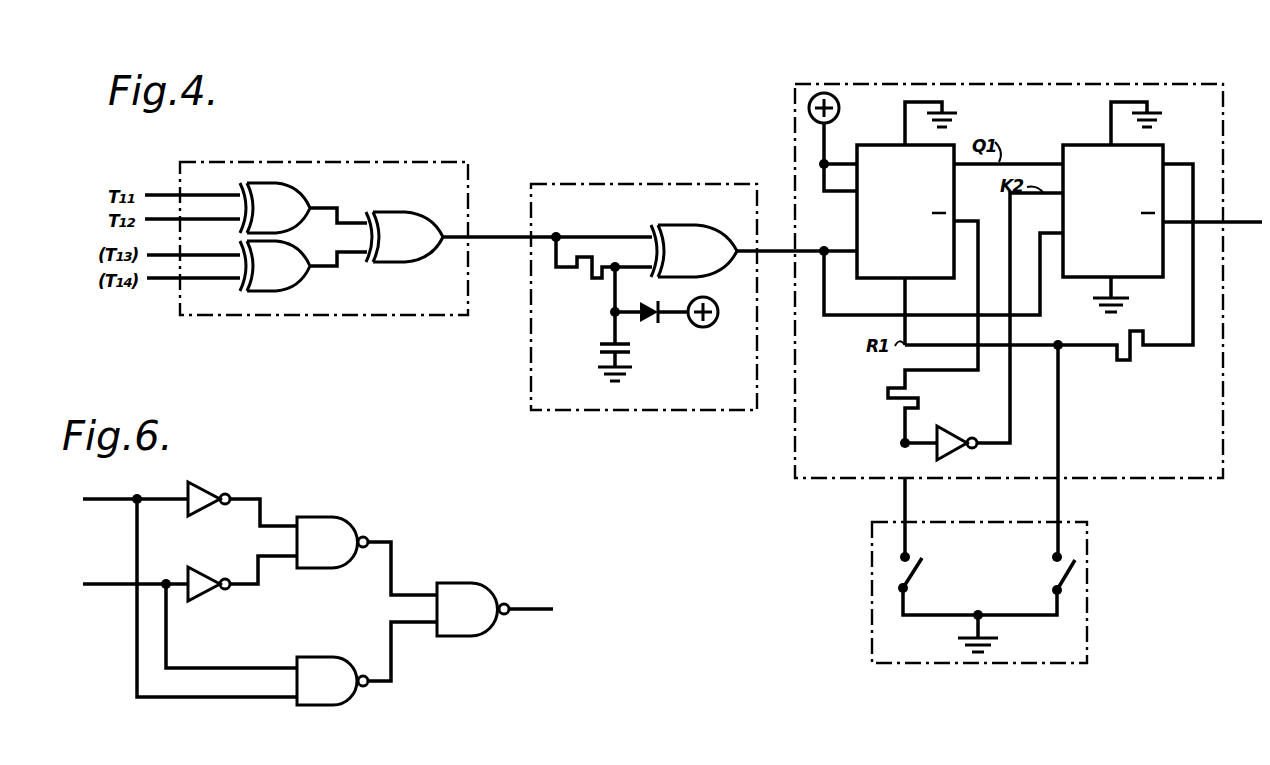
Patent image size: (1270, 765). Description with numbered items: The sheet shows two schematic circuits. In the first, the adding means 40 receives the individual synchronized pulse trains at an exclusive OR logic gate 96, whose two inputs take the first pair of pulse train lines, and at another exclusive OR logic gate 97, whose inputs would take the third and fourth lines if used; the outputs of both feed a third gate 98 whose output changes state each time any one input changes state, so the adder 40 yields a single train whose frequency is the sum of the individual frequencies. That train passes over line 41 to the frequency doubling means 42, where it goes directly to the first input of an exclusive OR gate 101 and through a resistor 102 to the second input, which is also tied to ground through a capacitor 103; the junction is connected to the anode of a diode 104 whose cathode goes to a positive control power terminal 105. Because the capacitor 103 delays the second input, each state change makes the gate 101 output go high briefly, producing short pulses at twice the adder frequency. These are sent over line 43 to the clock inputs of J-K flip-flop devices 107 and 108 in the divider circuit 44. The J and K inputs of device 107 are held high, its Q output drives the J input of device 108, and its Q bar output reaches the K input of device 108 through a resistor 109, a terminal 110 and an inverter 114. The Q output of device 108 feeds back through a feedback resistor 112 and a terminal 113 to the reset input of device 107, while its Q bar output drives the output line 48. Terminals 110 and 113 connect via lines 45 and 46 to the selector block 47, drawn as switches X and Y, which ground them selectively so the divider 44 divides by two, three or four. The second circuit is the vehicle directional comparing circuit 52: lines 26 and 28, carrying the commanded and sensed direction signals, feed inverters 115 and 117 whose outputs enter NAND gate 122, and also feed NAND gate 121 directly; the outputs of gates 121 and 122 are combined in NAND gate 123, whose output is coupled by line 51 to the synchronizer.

In FIG. 4, the adding means 40 is at (396, 160).
In FIG. 4, the exclusive OR logic gate 96 is at (290, 222).
In FIG. 4, the exclusive OR logic gate 97 is at (290, 280).
In FIG. 4, the third gate 98 is at (417, 251).
In FIG. 4, the line 41 is at (513, 230).
In FIG. 4, the frequency doubling means 42 is at (600, 412).
In FIG. 4, the exclusive OR gate 101 is at (710, 265).
In FIG. 4, the resistor 102 is at (596, 280).
In FIG. 4, the capacitor 103 is at (602, 352).
In FIG. 4, the diode 104 is at (651, 323).
In FIG. 4, the control power terminal 105 is at (698, 340).
In FIG. 4, the line 43 is at (768, 249).
In FIG. 4, the divider circuit 44 is at (793, 455).
In FIG. 4, the J-K flip-flop device 107 is at (919, 213).
In FIG. 4, the J-K flip-flop device 108 is at (1126, 213).
In FIG. 4, the output line 48 is at (1247, 221).
In FIG. 4, the resistor 109 is at (887, 397).
In FIG. 4, the terminal 110 is at (901, 443).
In FIG. 4, the feedback resistor 112 is at (1139, 362).
In FIG. 4, the terminal 113 is at (1054, 344).
In FIG. 4, the inverter 114 is at (970, 456).
In FIG. 4, the line 45 is at (901, 502).
In FIG. 4, the line 46 is at (1065, 504).
In FIG. 4, the selector block 47 is at (1090, 595).
In FIG. 6, the line 26 is at (174, 592).
In FIG. 6, the line 28 is at (174, 620).
In FIG. 6, the inverter 115 is at (212, 484).
In FIG. 6, the inverter 117 is at (202, 598).
In FIG. 6, the NAND logic gate 121 is at (340, 695).
In FIG. 6, the NAND logic gate 122 is at (340, 556).
In FIG. 6, the NAND logic gate 123 is at (479, 623).
In FIG. 6, the line 51 is at (530, 609).
In FIG. 6, the vehicle directional comparing circuit 52 is at (459, 719).